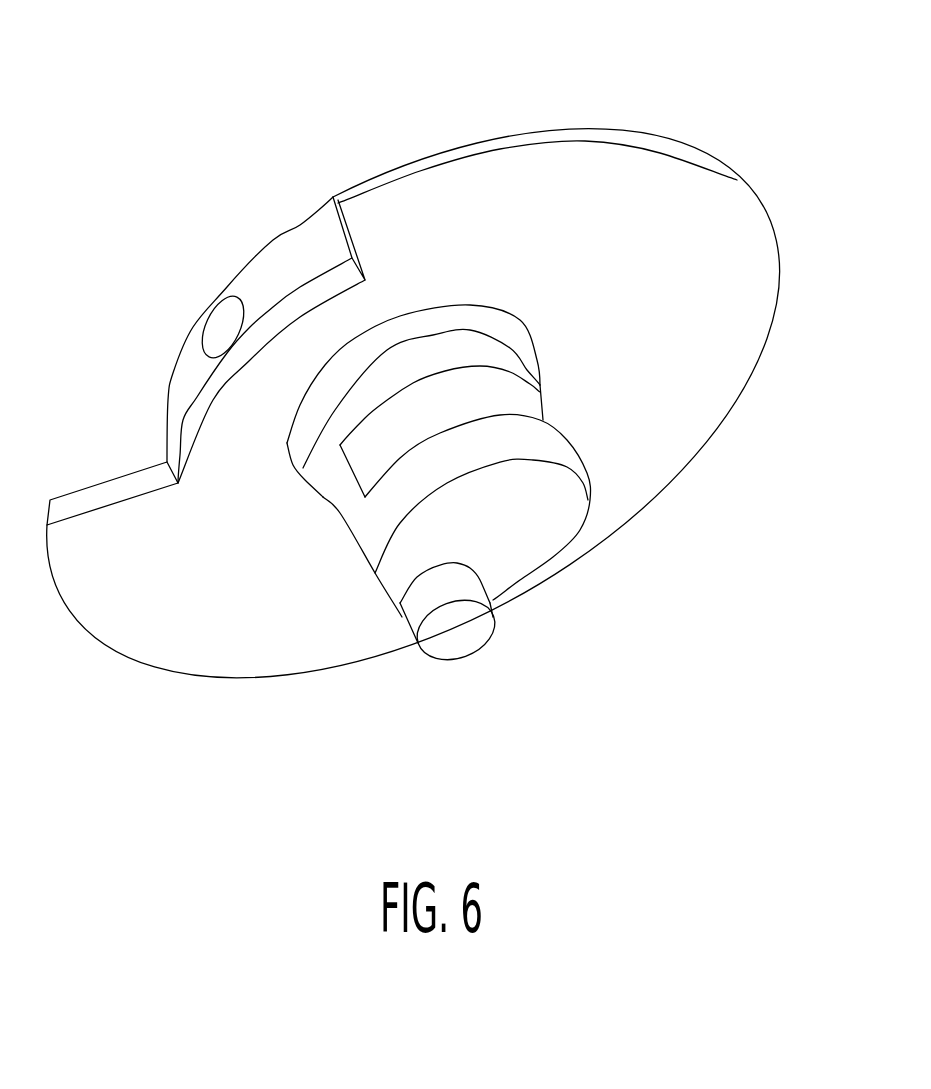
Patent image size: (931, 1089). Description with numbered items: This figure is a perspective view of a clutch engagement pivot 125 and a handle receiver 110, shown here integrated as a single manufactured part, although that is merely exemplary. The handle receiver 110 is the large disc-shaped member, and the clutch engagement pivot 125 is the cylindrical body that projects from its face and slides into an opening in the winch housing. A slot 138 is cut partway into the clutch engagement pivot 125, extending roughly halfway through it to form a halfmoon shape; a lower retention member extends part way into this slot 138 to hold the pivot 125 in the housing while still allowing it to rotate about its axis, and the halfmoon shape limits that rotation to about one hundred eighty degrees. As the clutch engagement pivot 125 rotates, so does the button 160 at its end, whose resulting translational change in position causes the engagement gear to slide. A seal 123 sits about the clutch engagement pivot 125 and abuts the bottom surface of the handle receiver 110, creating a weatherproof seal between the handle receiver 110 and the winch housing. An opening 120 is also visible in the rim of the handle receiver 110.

The handle receiver 110 is at (593, 130).
The hole 120 is at (225, 320).
The seal 123 is at (427, 327).
The slot 138 is at (500, 407).
The clutch engagement pivot 125 is at (553, 445).
The button 160 is at (467, 627).